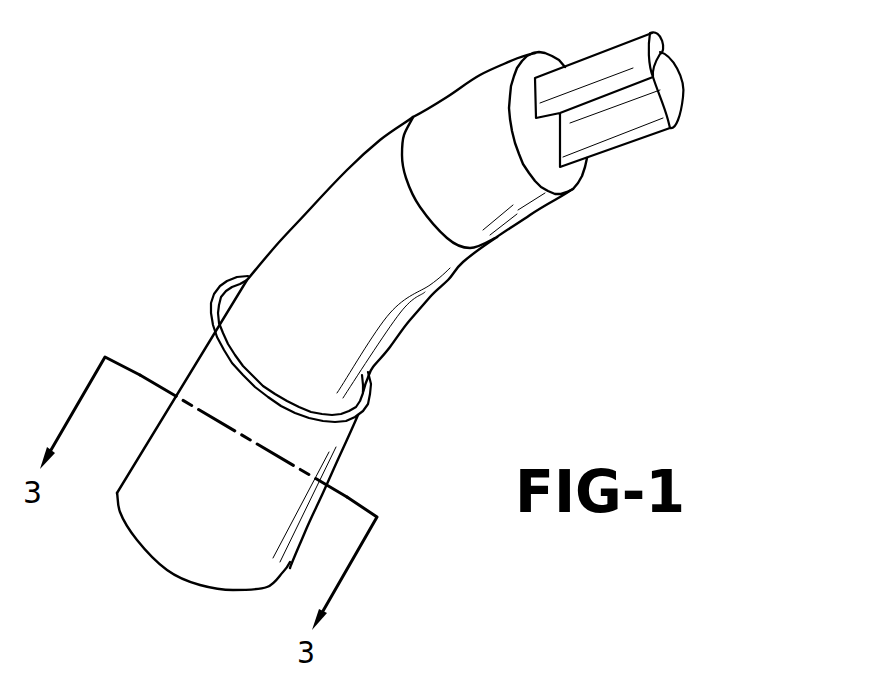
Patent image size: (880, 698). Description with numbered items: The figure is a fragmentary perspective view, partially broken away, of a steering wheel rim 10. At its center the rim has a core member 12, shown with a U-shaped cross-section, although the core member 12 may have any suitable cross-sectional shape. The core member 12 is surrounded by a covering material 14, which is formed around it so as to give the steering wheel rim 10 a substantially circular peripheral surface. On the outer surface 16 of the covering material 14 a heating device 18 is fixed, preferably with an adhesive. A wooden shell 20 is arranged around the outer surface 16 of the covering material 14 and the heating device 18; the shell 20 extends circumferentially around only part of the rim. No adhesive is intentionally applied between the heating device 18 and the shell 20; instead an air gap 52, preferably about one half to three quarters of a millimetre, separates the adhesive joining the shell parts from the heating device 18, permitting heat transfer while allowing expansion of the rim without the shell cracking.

The steering wheel rim 10 is at (442, 296).
The core member 12 is at (663, 40).
The covering material 14 is at (462, 102).
The outer surface 16 is at (547, 195).
The heating device 18 is at (310, 222).
The wooden shell 20 is at (332, 445).
The air gap 52 is at (227, 300).